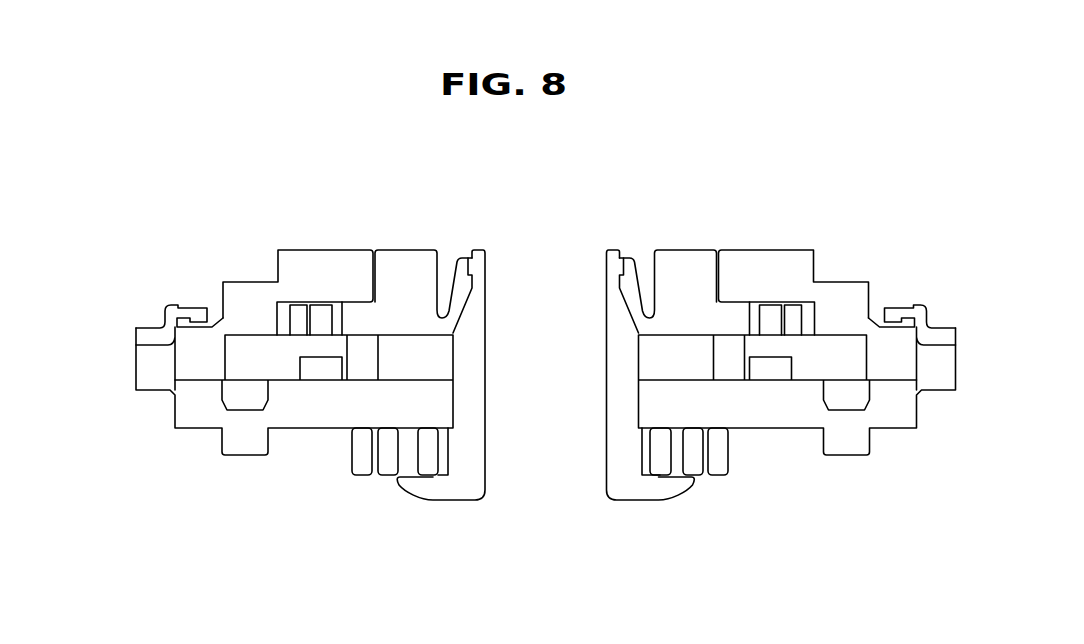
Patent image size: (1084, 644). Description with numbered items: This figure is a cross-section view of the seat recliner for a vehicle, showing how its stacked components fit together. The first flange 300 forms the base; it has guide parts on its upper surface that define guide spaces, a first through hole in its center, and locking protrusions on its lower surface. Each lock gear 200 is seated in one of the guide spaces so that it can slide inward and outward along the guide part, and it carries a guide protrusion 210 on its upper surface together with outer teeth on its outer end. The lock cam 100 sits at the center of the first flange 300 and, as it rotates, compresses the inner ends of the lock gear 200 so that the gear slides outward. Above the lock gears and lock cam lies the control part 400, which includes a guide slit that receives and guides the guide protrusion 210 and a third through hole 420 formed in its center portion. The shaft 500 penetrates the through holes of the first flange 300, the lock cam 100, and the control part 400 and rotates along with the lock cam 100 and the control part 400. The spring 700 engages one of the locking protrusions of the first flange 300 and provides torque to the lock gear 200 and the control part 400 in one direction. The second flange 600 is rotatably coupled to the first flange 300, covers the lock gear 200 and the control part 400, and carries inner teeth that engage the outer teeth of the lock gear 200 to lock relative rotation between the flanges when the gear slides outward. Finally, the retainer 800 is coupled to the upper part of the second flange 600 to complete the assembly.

The lock cam 100 is at (403, 355).
The lock gear 200 is at (252, 357).
The guide protrusion 210 is at (322, 317).
The first flange 300 is at (785, 428).
The control part 400 is at (700, 260).
The third through hole 420 is at (626, 258).
The shaft 500 is at (485, 447).
The second flange 600 is at (793, 263).
The spring 700 is at (362, 476).
The retainer 800 is at (913, 312).